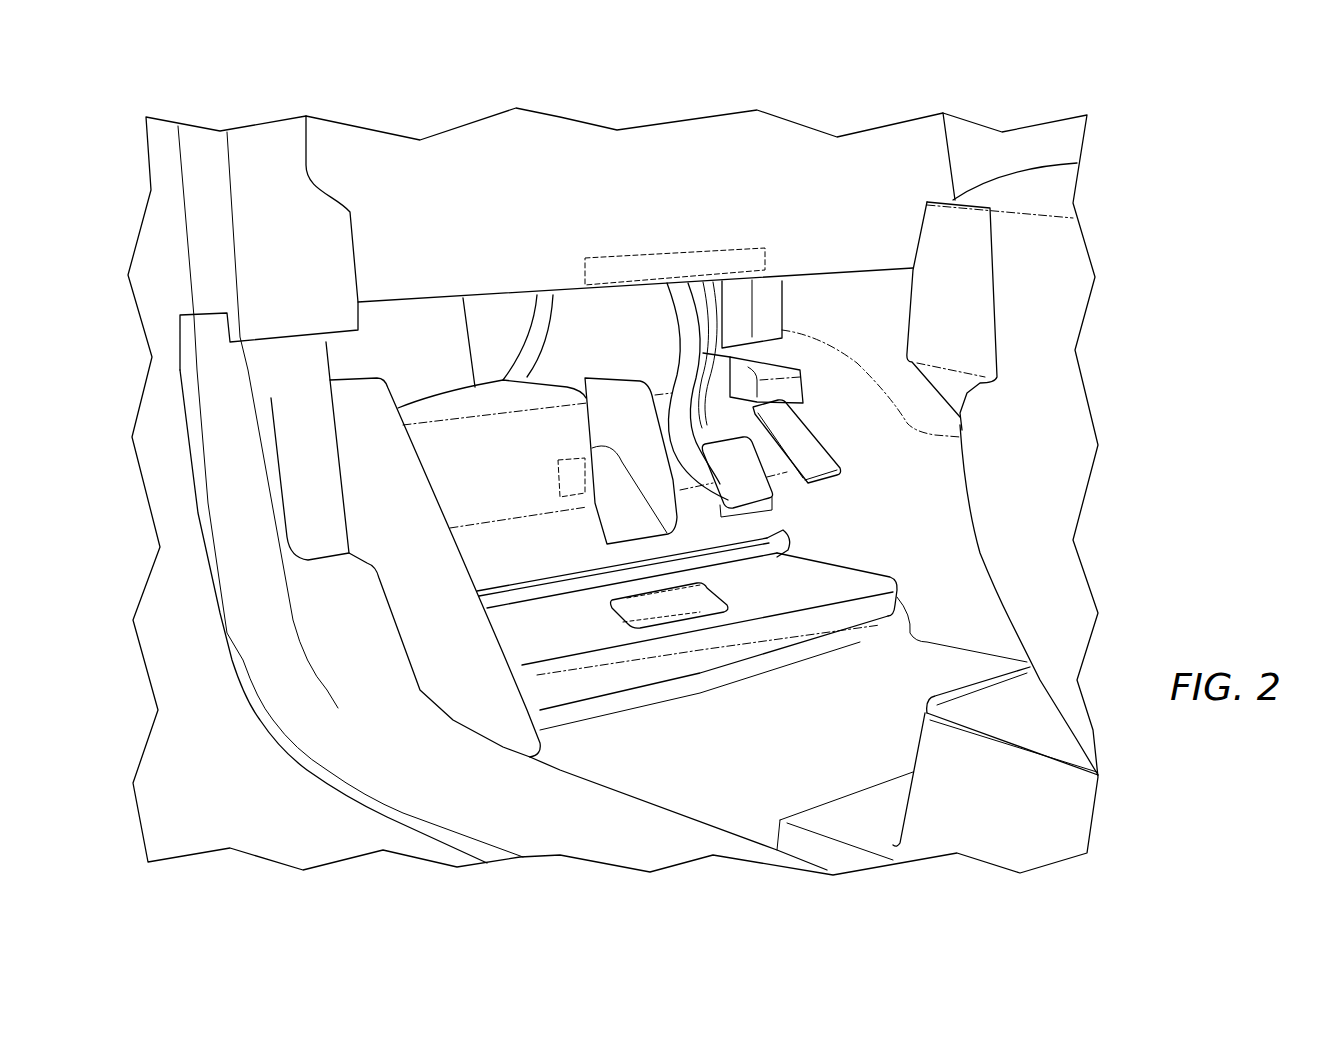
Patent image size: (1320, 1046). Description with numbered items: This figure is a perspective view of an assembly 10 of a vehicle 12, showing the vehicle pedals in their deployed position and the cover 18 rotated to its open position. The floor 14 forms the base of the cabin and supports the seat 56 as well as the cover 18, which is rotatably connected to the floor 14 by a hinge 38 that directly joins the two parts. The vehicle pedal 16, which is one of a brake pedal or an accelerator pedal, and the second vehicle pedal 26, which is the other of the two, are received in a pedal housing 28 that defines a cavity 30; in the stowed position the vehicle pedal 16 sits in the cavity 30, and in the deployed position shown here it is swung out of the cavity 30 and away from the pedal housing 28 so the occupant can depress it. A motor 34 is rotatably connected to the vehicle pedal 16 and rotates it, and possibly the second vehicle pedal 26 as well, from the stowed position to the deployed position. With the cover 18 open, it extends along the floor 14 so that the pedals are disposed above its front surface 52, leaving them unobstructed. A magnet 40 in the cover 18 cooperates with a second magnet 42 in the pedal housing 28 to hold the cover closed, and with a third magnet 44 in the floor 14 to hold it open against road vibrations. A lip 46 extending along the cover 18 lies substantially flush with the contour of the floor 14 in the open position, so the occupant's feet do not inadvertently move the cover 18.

The assembly 10 is at (838, 246).
The vehicle 12 is at (237, 94).
The floor 14 is at (721, 788).
The vehicle pedal 16 is at (690, 333).
The cover 18 is at (743, 606).
The second vehicle pedal 26 is at (747, 372).
The pedal housing 28 is at (497, 393).
The cavity 30 is at (608, 470).
The motor 34 is at (700, 253).
The hinge 38 is at (787, 553).
The magnet 40 is at (713, 590).
The second magnet 42 is at (557, 473).
The third magnet 44 is at (615, 613).
The lip 46 is at (885, 608).
The front surface 52 is at (842, 577).
The seat 56 is at (1002, 518).